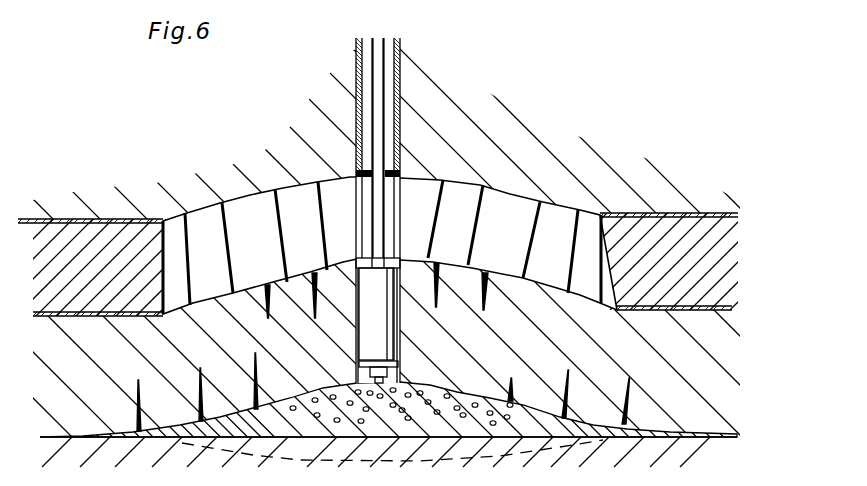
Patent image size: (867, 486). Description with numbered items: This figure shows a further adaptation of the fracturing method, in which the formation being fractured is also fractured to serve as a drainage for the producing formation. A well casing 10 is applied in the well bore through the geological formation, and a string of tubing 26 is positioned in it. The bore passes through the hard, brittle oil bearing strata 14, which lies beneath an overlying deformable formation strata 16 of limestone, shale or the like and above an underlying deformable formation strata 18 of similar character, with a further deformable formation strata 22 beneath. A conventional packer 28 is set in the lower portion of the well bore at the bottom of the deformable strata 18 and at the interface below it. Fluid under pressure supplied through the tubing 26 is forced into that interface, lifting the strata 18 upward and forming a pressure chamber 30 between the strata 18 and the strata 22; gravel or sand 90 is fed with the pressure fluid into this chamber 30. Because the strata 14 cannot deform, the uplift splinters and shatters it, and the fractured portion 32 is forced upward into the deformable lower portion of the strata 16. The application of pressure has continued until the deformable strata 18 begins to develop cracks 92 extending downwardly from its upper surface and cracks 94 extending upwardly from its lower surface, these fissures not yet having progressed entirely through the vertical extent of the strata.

The well casing 10 is at (399, 73).
The string of tubing 26 is at (355, 80).
The overlying deformable formation strata 16 is at (220, 160).
The fractured portion of the strata 32 is at (418, 184).
The oil bearing strata 14 is at (677, 232).
The cracks 92 is at (312, 284).
The packer 28 is at (388, 351).
The cracks 94 is at (559, 402).
The deformable formation strata 22 is at (637, 430).
The underlying deformable formation strata 18 is at (223, 393).
The pressure chamber 30 is at (298, 428).
The gravel or sand 90 is at (408, 420).